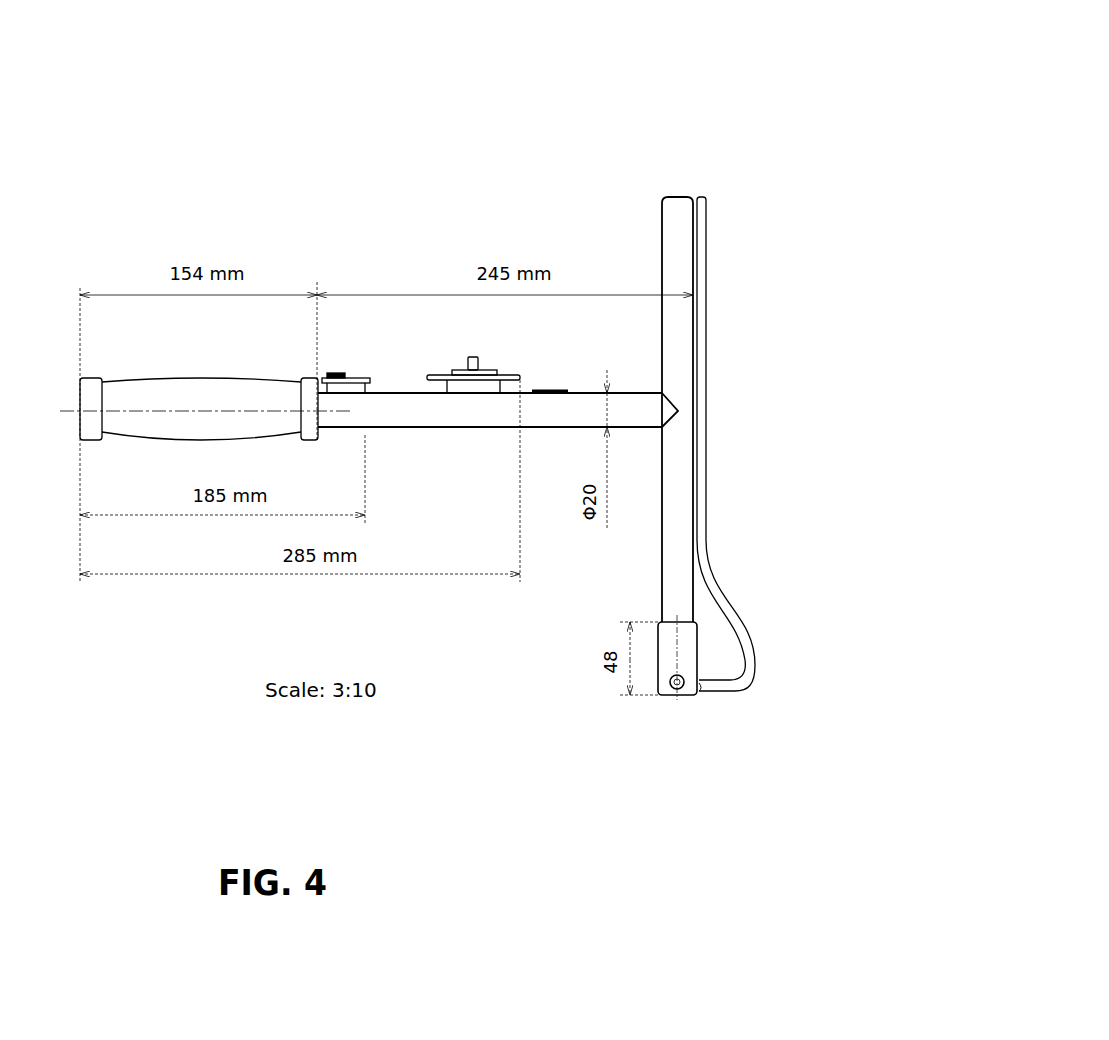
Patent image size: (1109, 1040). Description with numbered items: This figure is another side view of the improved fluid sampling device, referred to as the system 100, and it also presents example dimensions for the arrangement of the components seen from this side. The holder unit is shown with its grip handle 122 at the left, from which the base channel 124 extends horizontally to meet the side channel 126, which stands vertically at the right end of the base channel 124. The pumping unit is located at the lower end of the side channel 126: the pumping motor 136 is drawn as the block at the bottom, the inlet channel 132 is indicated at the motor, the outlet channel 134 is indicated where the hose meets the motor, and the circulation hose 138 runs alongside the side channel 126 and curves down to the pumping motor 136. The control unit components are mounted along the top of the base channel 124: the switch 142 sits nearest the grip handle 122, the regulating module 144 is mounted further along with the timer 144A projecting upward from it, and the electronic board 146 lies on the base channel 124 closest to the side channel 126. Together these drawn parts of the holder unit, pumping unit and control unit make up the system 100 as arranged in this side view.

The system 100 is at (803, 72).
The grip handle 122 is at (203, 400).
The base channel 124 is at (400, 413).
The side channel 126 is at (678, 493).
The inlet channel 132 is at (678, 688).
The outlet channel 134 is at (720, 697).
The pumping motor 136 is at (668, 652).
The circulation hose 138 is at (720, 610).
The switch 142 is at (347, 385).
The regulating module 144 is at (465, 387).
The timer 144A is at (475, 358).
The electronic board 146 is at (550, 393).